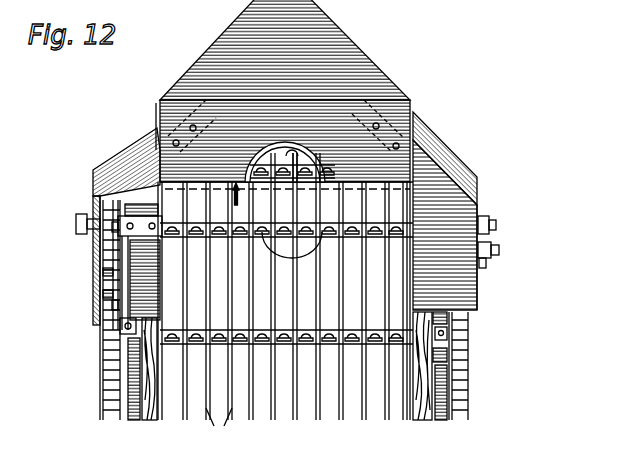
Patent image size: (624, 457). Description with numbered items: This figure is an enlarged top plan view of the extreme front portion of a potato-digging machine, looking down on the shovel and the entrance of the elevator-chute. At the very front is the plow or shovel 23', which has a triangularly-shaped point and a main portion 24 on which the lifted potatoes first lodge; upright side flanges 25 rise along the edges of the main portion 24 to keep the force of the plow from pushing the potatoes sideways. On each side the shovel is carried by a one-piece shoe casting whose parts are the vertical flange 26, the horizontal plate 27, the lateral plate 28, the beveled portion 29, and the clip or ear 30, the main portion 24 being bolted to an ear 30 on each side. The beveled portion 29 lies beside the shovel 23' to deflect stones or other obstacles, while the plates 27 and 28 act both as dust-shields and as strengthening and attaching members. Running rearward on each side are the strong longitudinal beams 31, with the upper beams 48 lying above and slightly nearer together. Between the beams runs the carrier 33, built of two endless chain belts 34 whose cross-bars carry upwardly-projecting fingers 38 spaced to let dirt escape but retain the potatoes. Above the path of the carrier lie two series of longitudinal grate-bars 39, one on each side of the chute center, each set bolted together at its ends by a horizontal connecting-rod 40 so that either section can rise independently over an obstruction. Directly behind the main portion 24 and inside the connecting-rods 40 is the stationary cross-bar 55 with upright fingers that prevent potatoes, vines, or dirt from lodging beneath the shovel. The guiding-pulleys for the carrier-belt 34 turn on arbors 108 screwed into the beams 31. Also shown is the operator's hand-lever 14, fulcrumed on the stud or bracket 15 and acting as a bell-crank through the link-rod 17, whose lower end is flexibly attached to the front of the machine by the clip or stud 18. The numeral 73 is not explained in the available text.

The plow or shovel 23' is at (285, 50).
The main portion 24 is at (286, 137).
The clip or ear 30 is at (178, 88).
The upright side flange 25 is at (158, 105).
The horizontal connecting-rod 40 is at (290, 151).
The carrier 33 is at (285, 286).
The hand-lever 14 is at (252, 194).
The stationary cross-bar 55 is at (288, 182).
The upwardly-projecting fingers 38 is at (292, 245).
The longitudinal grate-bars 39 is at (357, 284).
The vertical flange 26 is at (412, 272).
The horizontal plate 27 is at (445, 225).
The beveled portion 29 is at (457, 173).
The lateral plate 28 is at (480, 302).
The clip or stud 18 is at (490, 236).
The link-rod 17 is at (490, 258).
The control knob 73 is at (76, 222).
The arbor 108 is at (82, 234).
The stud or bracket 15 is at (100, 323).
The endless chain belt 34 is at (102, 380).
The beam 31 is at (152, 412).
The beam or timber 48 is at (146, 396).